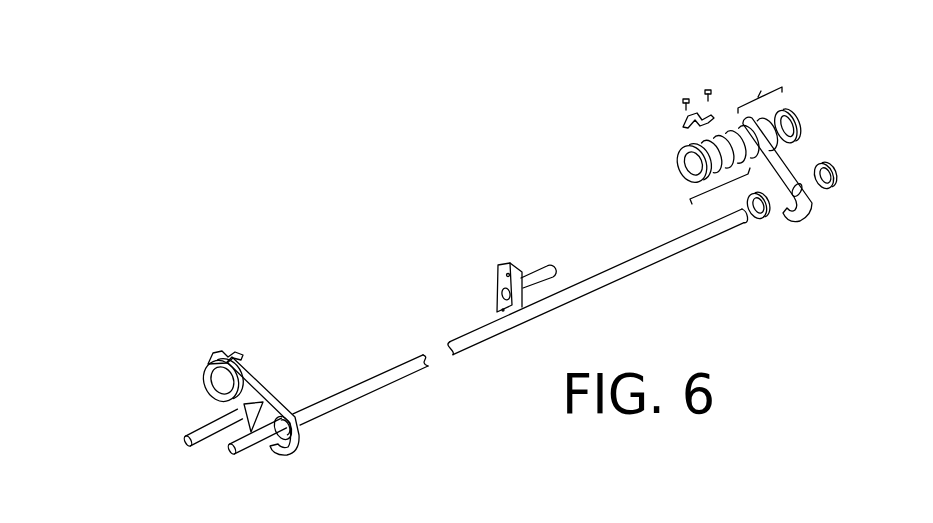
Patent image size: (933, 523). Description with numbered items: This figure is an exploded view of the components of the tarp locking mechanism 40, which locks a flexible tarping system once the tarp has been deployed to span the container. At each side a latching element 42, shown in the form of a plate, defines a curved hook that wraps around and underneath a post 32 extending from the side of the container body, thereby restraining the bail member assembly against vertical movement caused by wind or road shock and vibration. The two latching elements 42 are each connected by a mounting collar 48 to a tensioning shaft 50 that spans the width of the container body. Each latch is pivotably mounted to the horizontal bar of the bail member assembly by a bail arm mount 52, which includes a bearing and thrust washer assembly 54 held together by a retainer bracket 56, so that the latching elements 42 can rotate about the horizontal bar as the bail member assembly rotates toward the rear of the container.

The post 32 is at (190, 446).
The tarp locking mechanism 40 is at (399, 330).
The latching element 42 is at (299, 460).
The mounting collar 48 is at (303, 438).
The tensioning shaft 50 is at (333, 411).
The bail arm mount 52 is at (202, 381).
The bearing and thrust washer assembly 54 is at (256, 363).
The retainer bracket 56 is at (230, 350).